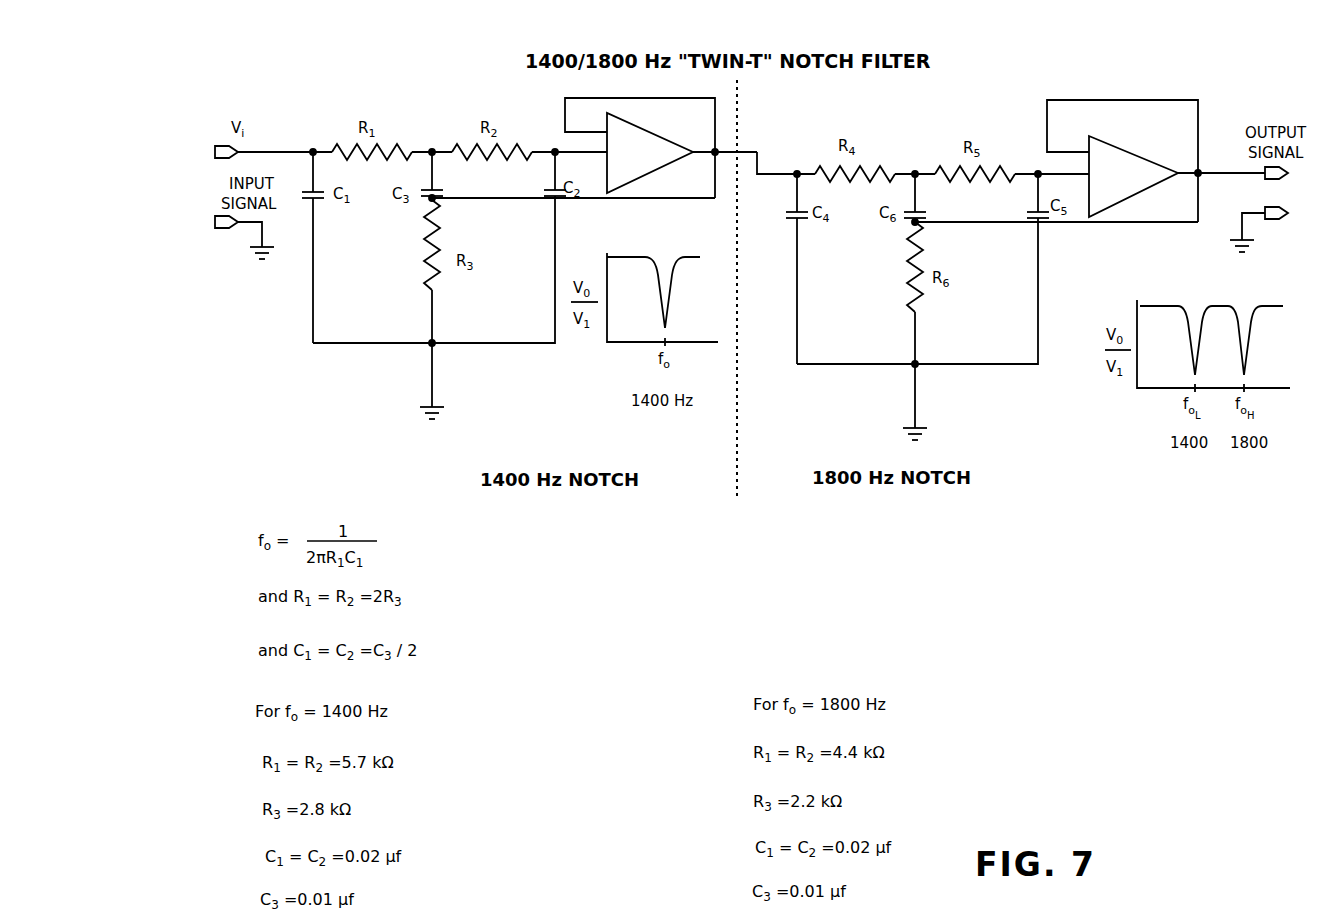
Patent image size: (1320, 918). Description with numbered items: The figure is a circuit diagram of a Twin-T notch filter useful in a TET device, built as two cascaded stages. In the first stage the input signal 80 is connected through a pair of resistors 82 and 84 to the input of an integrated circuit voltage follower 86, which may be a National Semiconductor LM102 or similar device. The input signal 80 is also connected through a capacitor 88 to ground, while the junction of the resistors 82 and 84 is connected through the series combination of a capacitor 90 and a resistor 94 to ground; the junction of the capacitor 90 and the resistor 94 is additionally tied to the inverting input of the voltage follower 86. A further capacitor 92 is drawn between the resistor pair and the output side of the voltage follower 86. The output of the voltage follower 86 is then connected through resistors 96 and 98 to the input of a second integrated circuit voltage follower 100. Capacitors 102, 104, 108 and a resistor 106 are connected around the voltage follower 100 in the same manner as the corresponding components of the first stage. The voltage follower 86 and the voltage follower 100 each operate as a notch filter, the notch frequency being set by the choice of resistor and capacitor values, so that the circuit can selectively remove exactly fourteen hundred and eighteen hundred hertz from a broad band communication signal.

The input signal 80 is at (272, 152).
The resistor 82 is at (397, 142).
The resistor 84 is at (513, 135).
The voltage follower 86 is at (633, 138).
The capacitor 88 is at (323, 203).
The capacitor 90 is at (436, 187).
The capacitor C2 92 is at (546, 183).
The resistor 94 is at (427, 265).
The resistor 96 is at (880, 162).
The resistor 98 is at (995, 162).
The second integrated circuit voltage follower 100 is at (1118, 159).
The capacitor 102 is at (803, 222).
The capacitor 104 is at (952, 200).
The resistor 106 is at (910, 287).
The capacitor 108 is at (1032, 207).